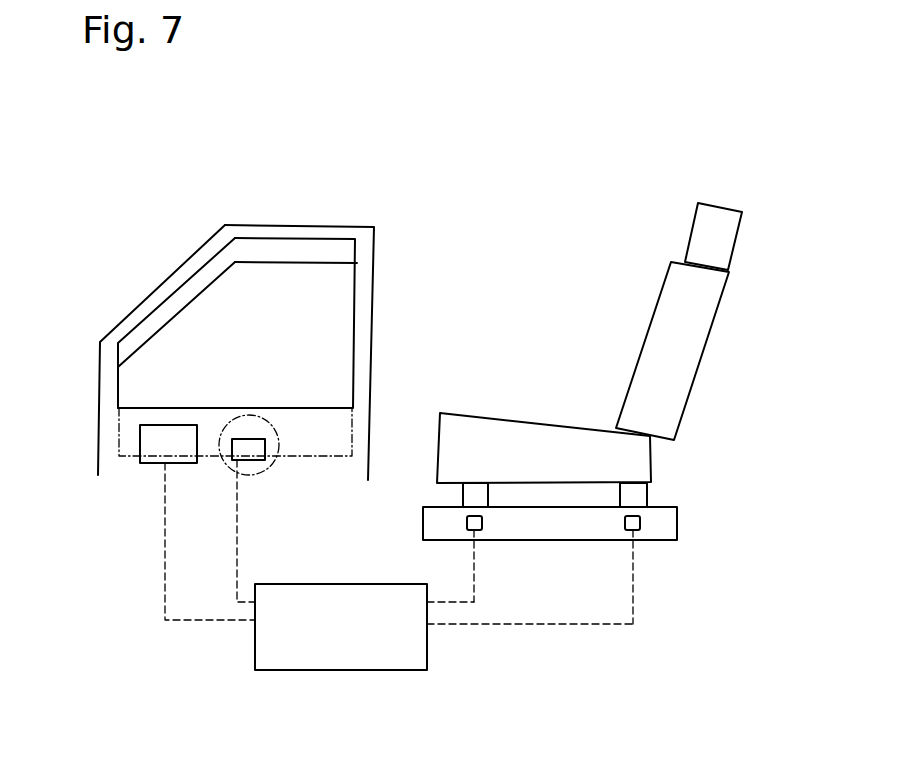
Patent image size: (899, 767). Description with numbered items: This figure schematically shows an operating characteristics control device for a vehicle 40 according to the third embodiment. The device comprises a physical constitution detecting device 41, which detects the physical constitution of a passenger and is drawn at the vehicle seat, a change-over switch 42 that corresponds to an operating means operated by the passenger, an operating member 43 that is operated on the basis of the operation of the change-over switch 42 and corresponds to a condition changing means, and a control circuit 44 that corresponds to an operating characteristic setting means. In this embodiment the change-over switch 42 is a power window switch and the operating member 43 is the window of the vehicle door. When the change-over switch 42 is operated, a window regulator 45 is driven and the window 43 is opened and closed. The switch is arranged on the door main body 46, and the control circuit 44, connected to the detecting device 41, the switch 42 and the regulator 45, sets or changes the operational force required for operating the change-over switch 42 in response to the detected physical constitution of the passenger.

The operating characteristics control device for a vehicle 40 is at (523, 235).
The physical constitution detecting device 41 is at (637, 522).
The change-over switch 42 is at (250, 455).
The operating member 43 is at (330, 343).
The control circuit 44 is at (333, 663).
The window regulator 45 is at (157, 462).
The door main body 46 is at (362, 405).